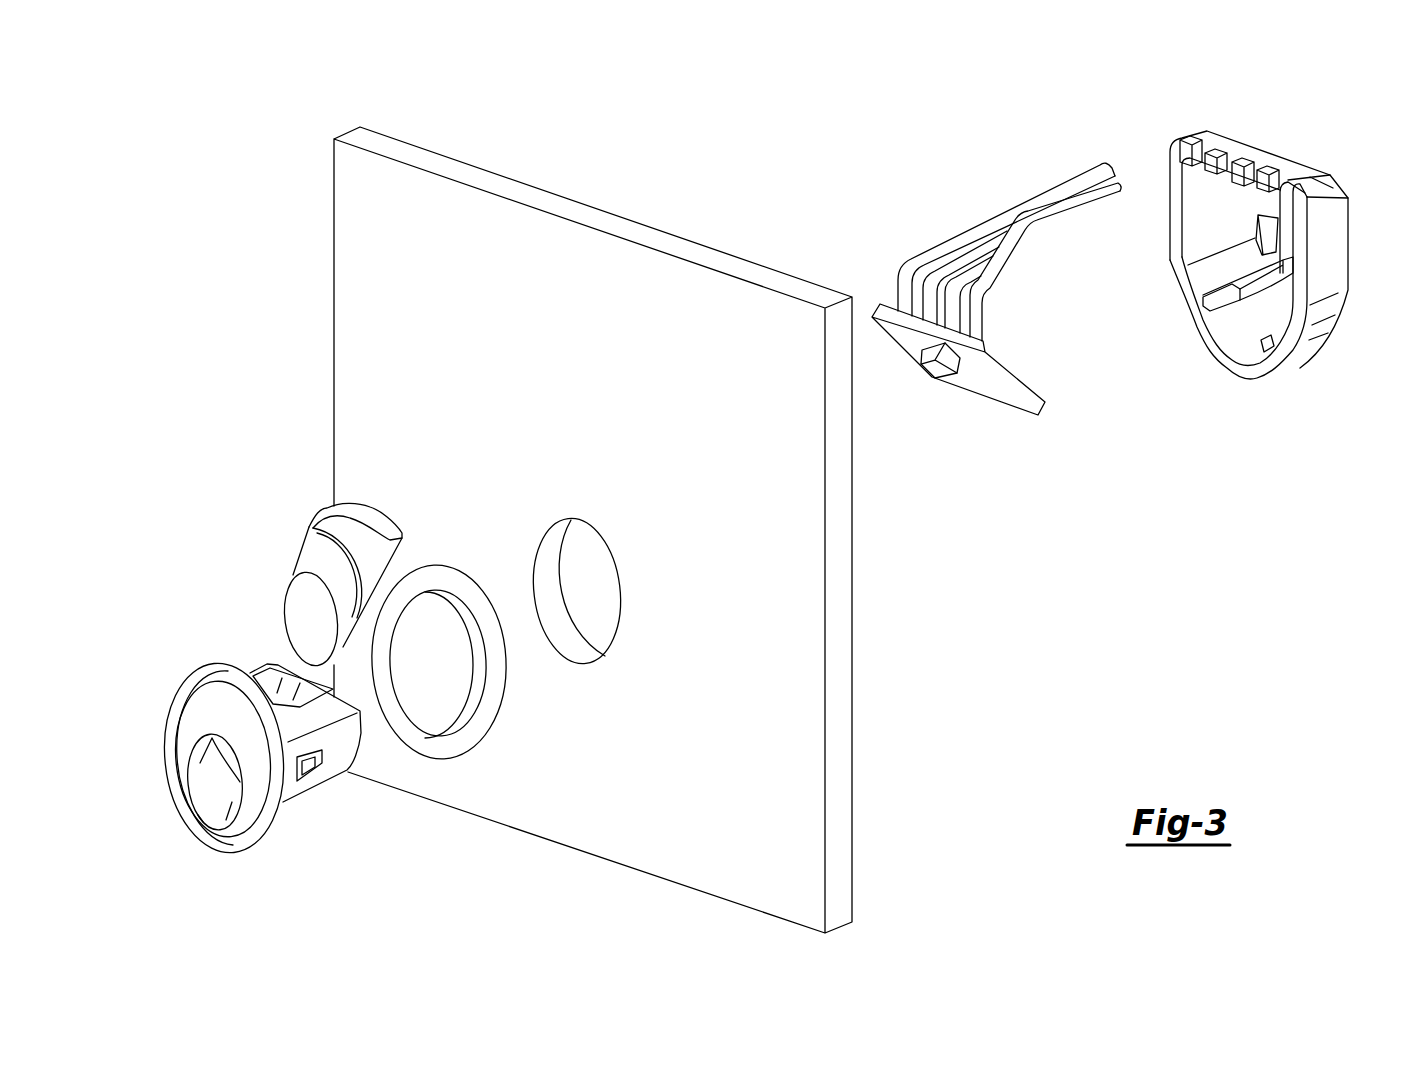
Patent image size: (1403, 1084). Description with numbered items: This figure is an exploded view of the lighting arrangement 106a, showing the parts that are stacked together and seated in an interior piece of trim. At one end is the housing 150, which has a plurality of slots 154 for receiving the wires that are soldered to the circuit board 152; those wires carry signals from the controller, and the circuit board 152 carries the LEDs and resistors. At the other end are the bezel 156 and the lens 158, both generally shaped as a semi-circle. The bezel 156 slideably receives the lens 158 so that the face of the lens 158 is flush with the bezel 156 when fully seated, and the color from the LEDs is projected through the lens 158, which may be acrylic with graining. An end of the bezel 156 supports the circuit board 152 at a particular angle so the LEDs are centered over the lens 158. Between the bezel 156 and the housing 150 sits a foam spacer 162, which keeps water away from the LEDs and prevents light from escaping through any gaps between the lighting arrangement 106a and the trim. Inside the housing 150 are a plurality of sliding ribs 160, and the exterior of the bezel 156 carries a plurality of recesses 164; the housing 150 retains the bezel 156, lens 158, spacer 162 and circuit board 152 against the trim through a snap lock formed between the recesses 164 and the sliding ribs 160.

The lighting arrangement 106a is at (680, 176).
The housing 150 is at (1182, 135).
The circuit board 152 is at (1037, 402).
The slots 154 is at (1247, 146).
The bezel 156 is at (216, 663).
The lens 158 is at (283, 622).
The sliding ribs 160 is at (1217, 300).
The foam spacer 162 is at (470, 728).
The recesses 164 is at (308, 767).